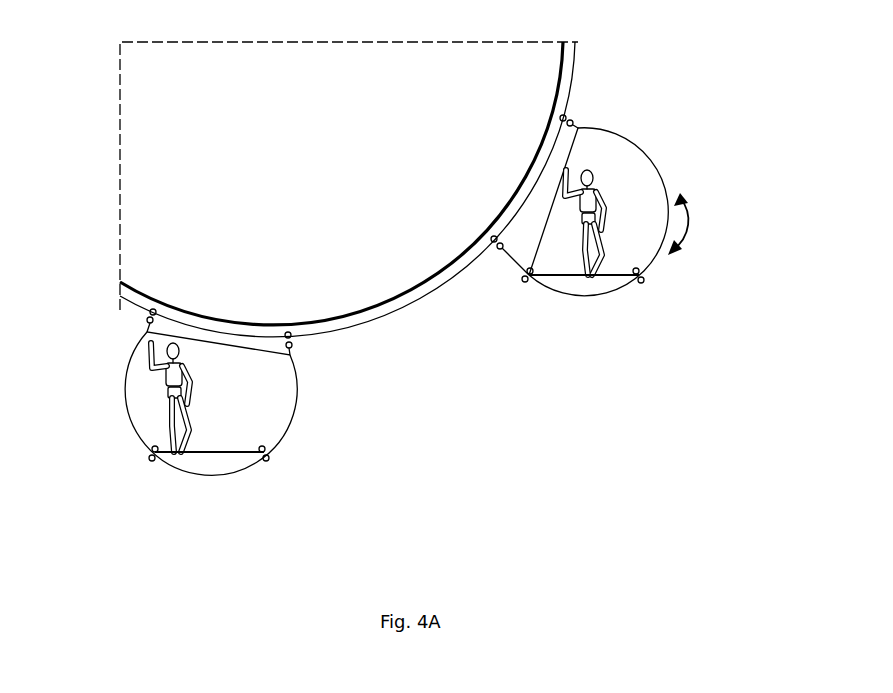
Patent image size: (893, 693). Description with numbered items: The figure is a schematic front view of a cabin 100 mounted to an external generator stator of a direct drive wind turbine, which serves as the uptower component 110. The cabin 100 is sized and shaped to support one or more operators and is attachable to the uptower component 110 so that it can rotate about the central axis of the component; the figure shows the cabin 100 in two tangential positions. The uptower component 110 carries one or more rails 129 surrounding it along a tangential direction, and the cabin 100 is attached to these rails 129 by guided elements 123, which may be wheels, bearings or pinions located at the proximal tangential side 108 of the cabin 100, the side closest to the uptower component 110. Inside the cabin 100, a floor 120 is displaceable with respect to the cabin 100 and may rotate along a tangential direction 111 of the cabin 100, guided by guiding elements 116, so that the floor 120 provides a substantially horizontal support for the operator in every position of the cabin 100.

The cabin 100 is at (296, 412).
The proximal tangential side 108 is at (291, 345).
The uptower component 110 is at (564, 74).
The tangential direction 111 is at (686, 223).
The guiding elements 116 is at (152, 456).
The floor 120 is at (217, 455).
The guided elements 123 is at (150, 316).
The rails 129 is at (401, 312).